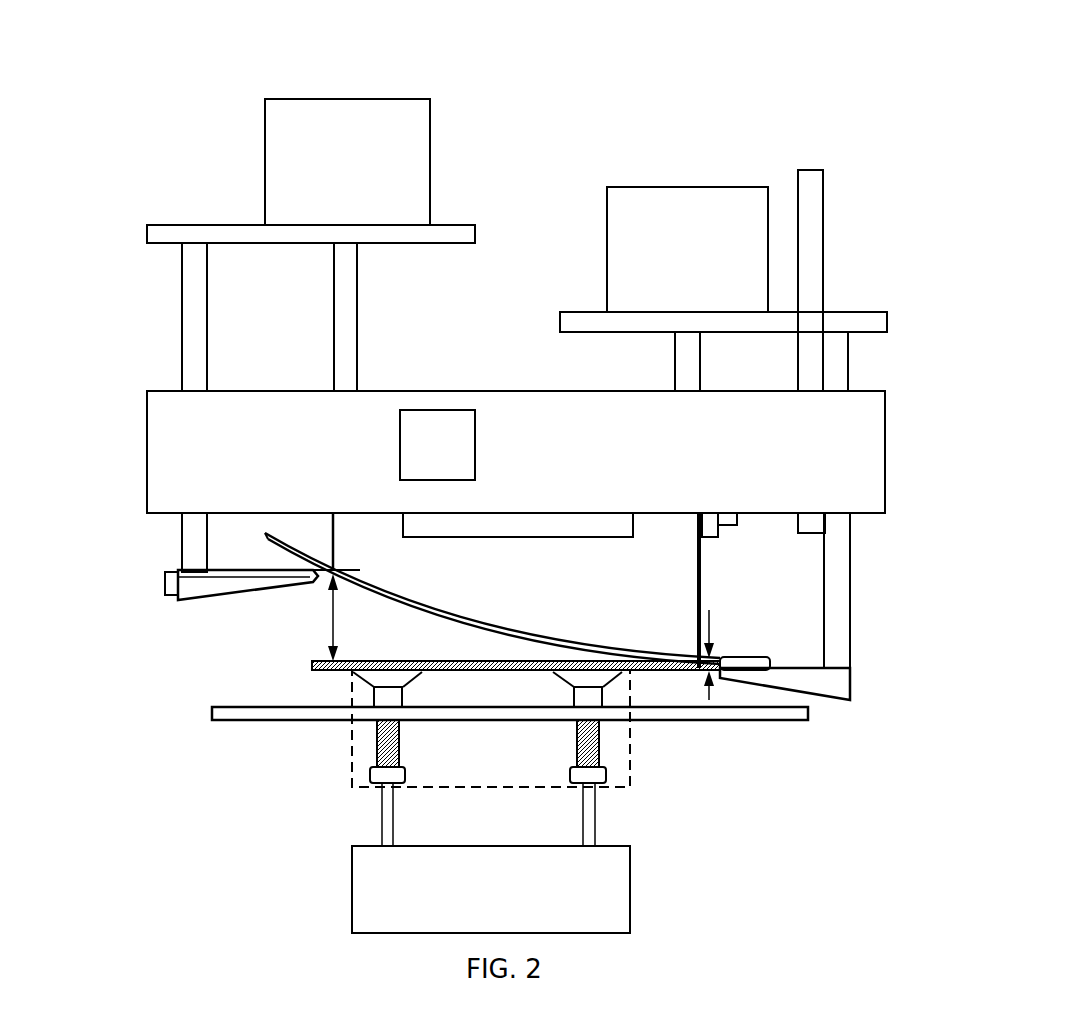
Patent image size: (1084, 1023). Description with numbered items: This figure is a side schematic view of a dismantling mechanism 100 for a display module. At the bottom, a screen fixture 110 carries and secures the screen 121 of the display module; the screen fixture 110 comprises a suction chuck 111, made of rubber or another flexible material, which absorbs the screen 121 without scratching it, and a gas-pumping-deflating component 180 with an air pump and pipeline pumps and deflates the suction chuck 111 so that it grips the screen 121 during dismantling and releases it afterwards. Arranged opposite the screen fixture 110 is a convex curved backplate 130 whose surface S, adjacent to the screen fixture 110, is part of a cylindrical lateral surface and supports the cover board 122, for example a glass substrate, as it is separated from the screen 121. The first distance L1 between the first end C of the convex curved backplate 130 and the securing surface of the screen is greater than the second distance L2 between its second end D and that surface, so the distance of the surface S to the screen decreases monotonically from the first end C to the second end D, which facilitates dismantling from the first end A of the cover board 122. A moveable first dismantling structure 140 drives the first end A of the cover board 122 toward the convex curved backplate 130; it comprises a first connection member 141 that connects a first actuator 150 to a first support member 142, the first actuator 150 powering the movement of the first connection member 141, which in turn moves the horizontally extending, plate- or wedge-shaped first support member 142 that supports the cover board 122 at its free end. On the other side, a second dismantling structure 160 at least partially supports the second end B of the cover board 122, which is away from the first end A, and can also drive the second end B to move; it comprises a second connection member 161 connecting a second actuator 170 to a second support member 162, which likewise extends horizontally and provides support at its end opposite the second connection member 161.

The dismantling mechanism 100 is at (108, 59).
The screen fixture 110 is at (423, 765).
The suction chuck 111 is at (567, 759).
The screen 121 is at (396, 693).
The cover board 122 is at (221, 622).
The convex curved backplate 130 is at (464, 686).
The first dismantling structure 140 is at (188, 542).
The first connection member 141 is at (261, 308).
The first support member 142 is at (180, 575).
The first actuator 150 is at (236, 162).
The second dismantling structure 160 is at (819, 590).
The second connection member 161 is at (764, 280).
The second support member 162 is at (841, 732).
The second actuator 170 is at (642, 231).
The gas-pumping-deflating component 180 is at (542, 889).
The surface of the convex curved backplate S is at (492, 598).
The first end of the cover board A is at (298, 553).
The second end of the cover board B is at (748, 663).
The first end of the convex curved backplate C is at (333, 570).
The second end of the convex curved backplate D is at (698, 655).
The first distance L1 is at (332, 617).
The second distance L2 is at (727, 655).